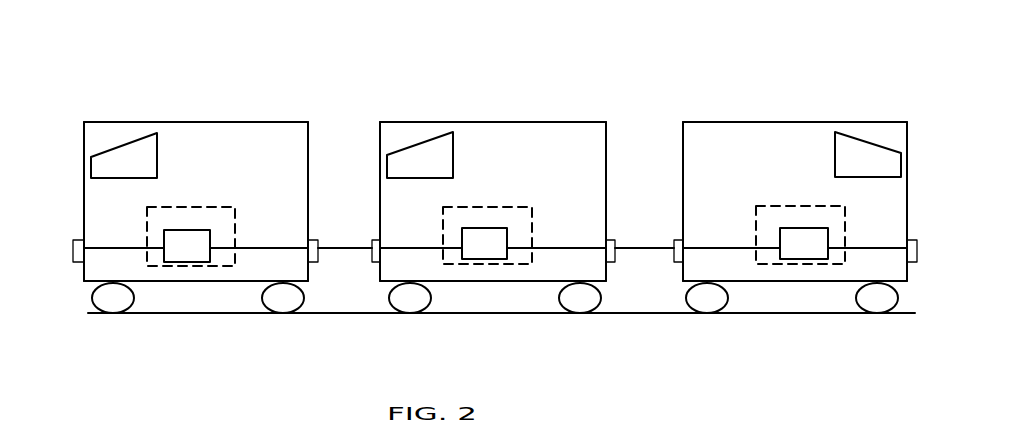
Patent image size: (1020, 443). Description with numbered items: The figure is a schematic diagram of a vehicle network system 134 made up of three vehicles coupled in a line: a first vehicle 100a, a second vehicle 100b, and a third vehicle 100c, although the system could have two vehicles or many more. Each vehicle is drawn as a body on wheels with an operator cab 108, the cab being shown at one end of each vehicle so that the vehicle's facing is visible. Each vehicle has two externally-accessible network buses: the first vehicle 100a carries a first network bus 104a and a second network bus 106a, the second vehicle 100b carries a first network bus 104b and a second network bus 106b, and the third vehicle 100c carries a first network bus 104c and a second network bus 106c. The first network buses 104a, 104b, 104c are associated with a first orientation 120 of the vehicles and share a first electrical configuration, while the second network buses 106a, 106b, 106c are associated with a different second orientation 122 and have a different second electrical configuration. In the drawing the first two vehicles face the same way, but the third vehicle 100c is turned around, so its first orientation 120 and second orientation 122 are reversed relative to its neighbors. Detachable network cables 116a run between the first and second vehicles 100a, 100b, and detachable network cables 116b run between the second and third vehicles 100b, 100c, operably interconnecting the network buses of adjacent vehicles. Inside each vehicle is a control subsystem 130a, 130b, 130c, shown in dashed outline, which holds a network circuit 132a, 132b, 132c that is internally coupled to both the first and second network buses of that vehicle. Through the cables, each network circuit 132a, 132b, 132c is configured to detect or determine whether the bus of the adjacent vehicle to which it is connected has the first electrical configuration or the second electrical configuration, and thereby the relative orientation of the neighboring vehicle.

The vehicle network system 134 is at (127, 63).
The first vehicle 100a is at (207, 122).
The second vehicle 100b is at (504, 120).
The third vehicle 100c is at (785, 122).
The operator cab 108 is at (129, 141).
The first orientation 120 is at (82, 150).
The second orientation 122 is at (309, 156).
The first network bus 104a is at (108, 246).
The second network bus 106a is at (262, 246).
The control subsystem 130a is at (175, 206).
The network circuit 132a is at (187, 229).
The first network bus 104b is at (405, 245).
The second network bus 106b is at (560, 245).
The control subsystem 130b is at (472, 206).
The network circuit 132b is at (483, 227).
The first network bus 104c is at (883, 245).
The second network bus 106c is at (730, 245).
The control subsystem 130c is at (817, 205).
The network circuit 132c is at (804, 228).
The detachable network cables 116a is at (337, 249).
The detachable network cables 116b is at (637, 249).